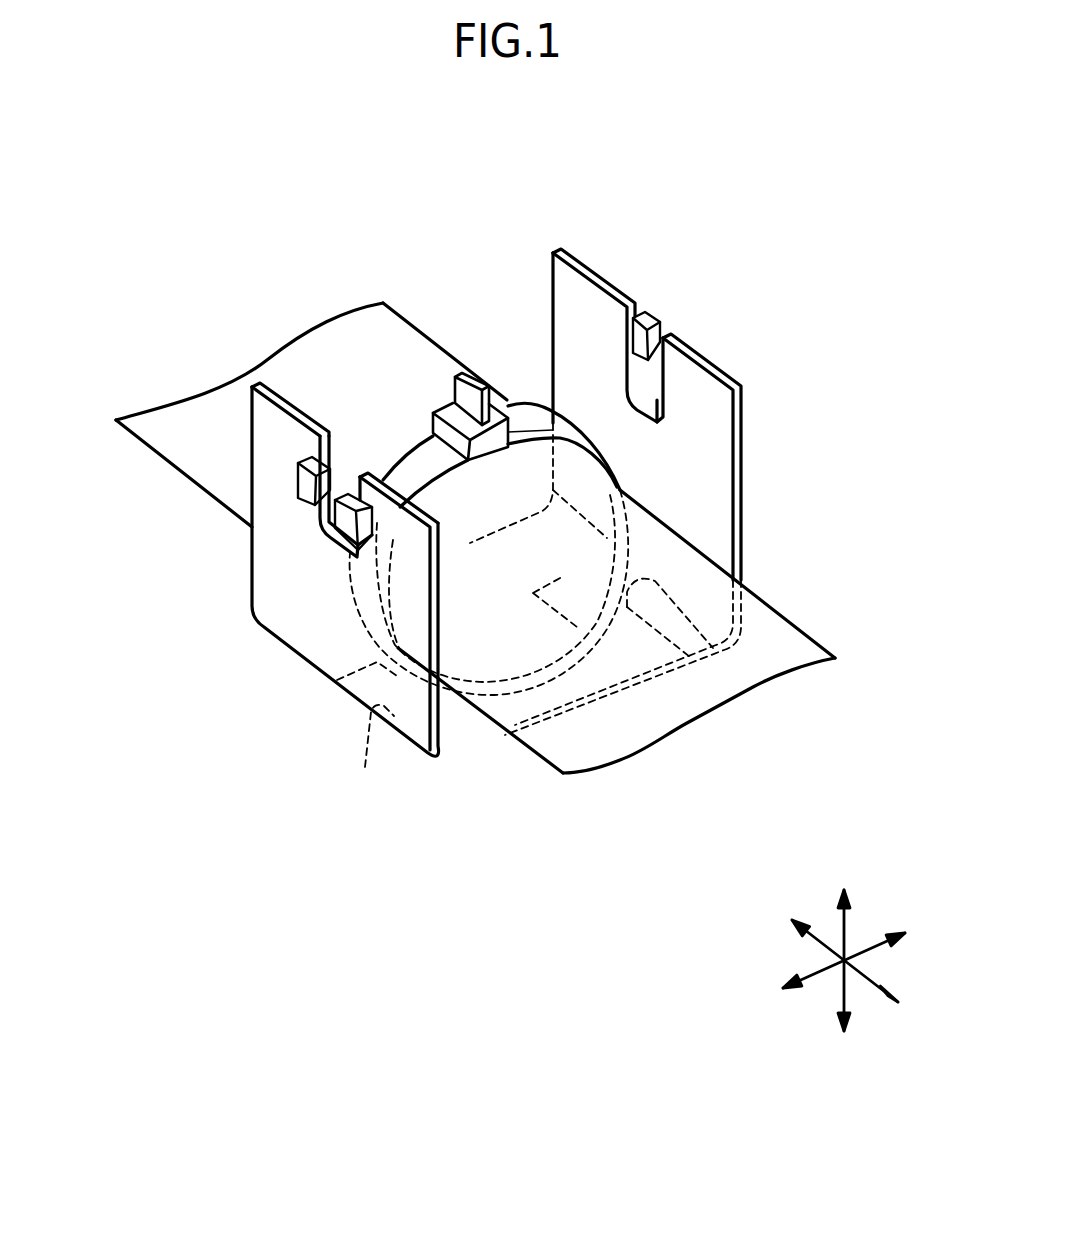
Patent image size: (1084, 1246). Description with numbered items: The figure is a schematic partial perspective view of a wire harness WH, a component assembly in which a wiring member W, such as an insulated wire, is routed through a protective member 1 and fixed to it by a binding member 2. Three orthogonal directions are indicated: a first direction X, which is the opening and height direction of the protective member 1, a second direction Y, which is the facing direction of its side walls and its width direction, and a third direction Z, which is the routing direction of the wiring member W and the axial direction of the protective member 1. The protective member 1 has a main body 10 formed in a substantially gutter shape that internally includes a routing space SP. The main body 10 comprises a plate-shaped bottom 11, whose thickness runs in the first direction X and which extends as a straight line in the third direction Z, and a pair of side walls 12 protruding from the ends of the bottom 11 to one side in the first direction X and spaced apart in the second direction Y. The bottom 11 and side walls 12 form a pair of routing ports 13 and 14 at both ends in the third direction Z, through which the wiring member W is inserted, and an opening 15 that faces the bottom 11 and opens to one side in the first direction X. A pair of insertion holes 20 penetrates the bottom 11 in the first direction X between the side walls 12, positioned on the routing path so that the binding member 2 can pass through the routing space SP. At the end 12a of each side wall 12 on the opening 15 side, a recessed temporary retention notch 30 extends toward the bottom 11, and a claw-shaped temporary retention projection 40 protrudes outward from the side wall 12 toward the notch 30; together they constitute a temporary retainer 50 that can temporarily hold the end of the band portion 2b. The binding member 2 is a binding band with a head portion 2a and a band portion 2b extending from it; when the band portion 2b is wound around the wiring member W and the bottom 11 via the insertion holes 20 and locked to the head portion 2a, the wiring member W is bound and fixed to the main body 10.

The protective member 1 is at (240, 445).
The wiring member W is at (240, 368).
The wire harness WH is at (378, 186).
The binding member 2 is at (426, 420).
The head portion 2a is at (423, 422).
The band portion 2b is at (530, 440).
The main body 10 is at (468, 518).
The bottom 11 is at (497, 730).
The side wall 12 is at (280, 420).
The end 12a is at (312, 425).
The routing port 13 is at (482, 738).
The routing port 14 is at (535, 315).
The opening 15 is at (588, 310).
The insertion hole 20 is at (773, 550).
The temporary retention notch 30 is at (328, 450).
The temporary retention projection 40 is at (300, 488).
The temporary retainer 50 is at (673, 302).
The routing space SP is at (683, 498).
The first direction X is at (847, 928).
The second direction Y is at (822, 977).
The third direction Z is at (867, 973).